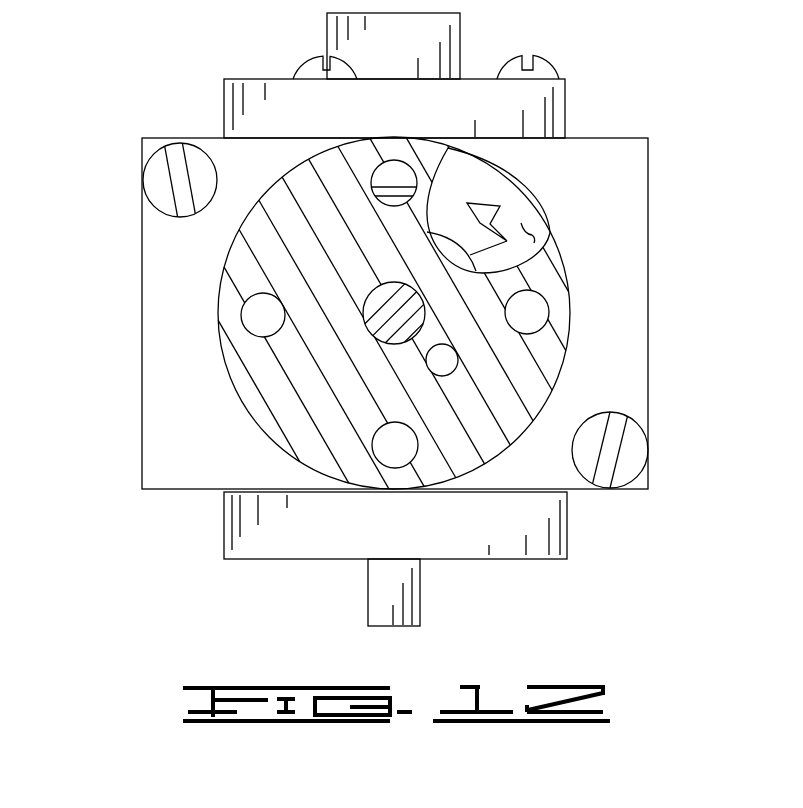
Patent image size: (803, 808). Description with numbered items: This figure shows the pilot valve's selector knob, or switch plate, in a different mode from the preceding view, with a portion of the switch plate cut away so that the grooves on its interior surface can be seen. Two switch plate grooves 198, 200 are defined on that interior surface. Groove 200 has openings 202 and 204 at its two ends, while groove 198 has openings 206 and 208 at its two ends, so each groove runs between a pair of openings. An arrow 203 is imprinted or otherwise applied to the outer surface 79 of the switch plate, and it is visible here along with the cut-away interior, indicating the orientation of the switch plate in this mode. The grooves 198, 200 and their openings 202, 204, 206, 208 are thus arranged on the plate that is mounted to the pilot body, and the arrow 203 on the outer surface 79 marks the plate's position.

The switch plate groove 198 is at (323, 390).
The switch plate groove 200 is at (553, 358).
The opening 202 is at (377, 162).
The arrow 203 is at (500, 206).
The outer surface 79 is at (450, 241).
The opening 204 is at (538, 308).
The opening 206 is at (250, 320).
The opening 208 is at (392, 457).